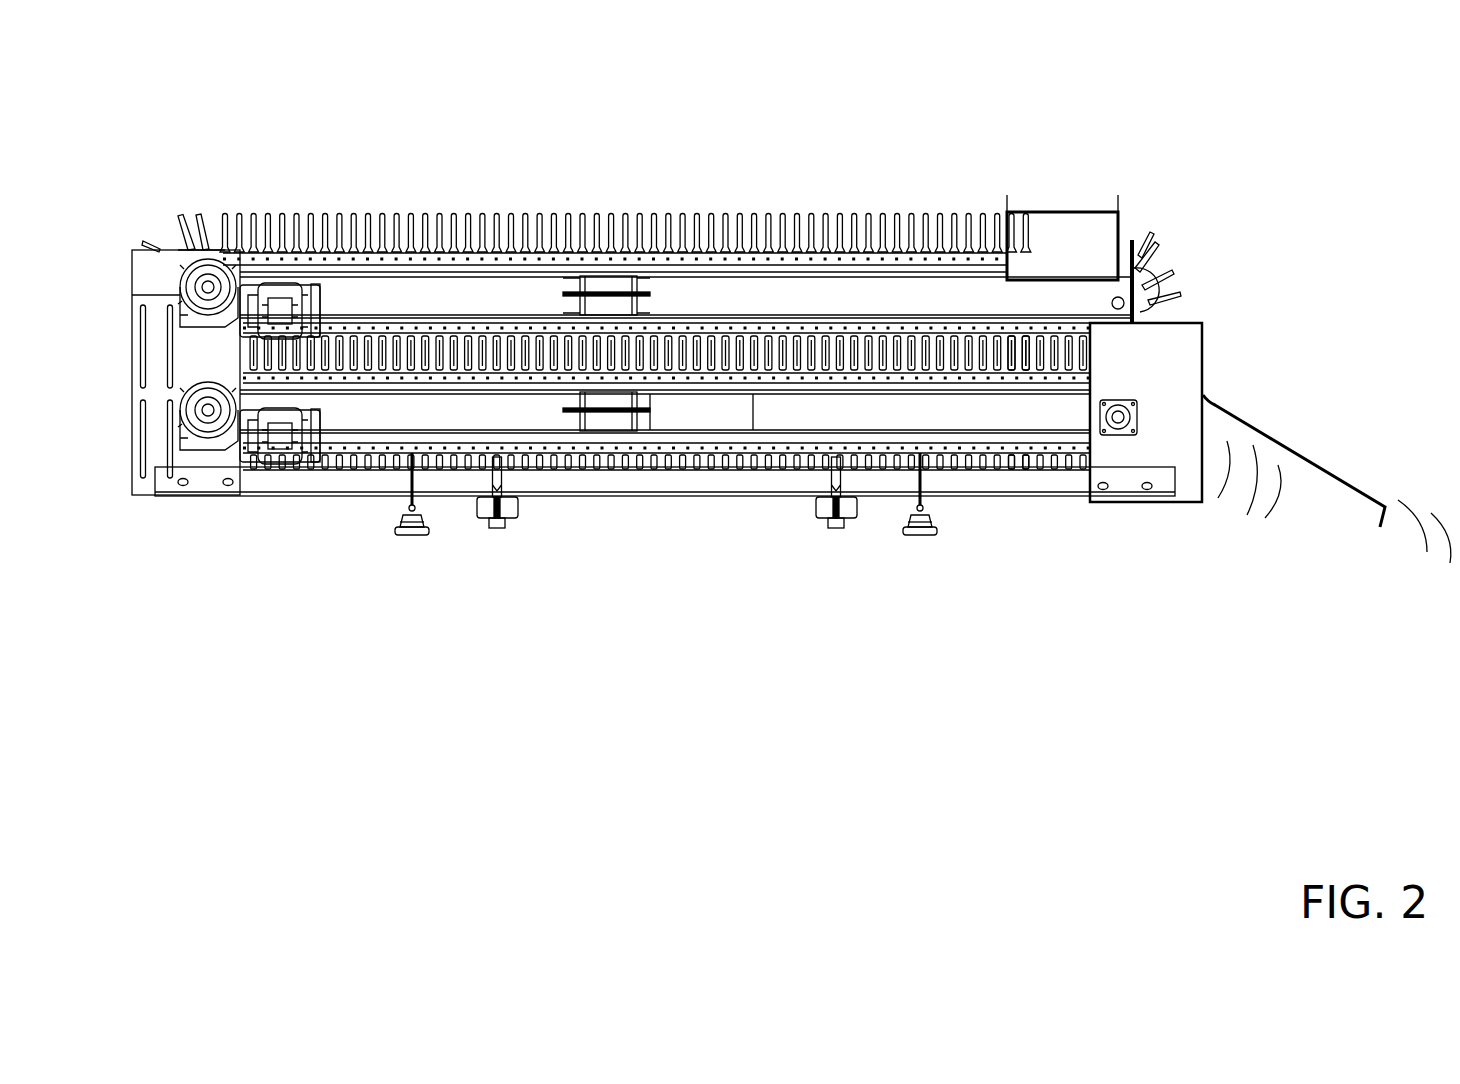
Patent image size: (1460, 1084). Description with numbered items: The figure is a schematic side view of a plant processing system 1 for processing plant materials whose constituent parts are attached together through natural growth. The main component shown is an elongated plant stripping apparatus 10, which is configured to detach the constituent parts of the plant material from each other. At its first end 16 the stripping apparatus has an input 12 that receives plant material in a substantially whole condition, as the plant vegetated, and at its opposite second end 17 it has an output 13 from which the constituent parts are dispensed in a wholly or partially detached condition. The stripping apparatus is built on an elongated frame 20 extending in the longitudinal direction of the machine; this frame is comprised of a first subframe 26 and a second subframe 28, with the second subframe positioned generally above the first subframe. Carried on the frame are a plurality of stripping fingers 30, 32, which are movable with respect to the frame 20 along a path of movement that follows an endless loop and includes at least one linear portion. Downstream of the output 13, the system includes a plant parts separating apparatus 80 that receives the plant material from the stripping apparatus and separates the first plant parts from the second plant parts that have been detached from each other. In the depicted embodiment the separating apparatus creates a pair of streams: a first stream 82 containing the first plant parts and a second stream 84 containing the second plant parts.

The plant processing system 1 is at (1215, 70).
The plant stripping apparatus 10 is at (892, 148).
The input 12 is at (112, 390).
The output 13 is at (1233, 347).
The first end 16 is at (183, 173).
The second end 17 is at (1160, 200).
The frame 20 is at (347, 503).
The first subframe 26 is at (798, 412).
The second subframe 28 is at (430, 292).
The stripping fingers 30 is at (975, 360).
The stripping fingers 32 is at (962, 360).
The plant parts separating apparatus 80 is at (1327, 420).
The first stream 82 is at (1290, 505).
The second stream 84 is at (1415, 570).